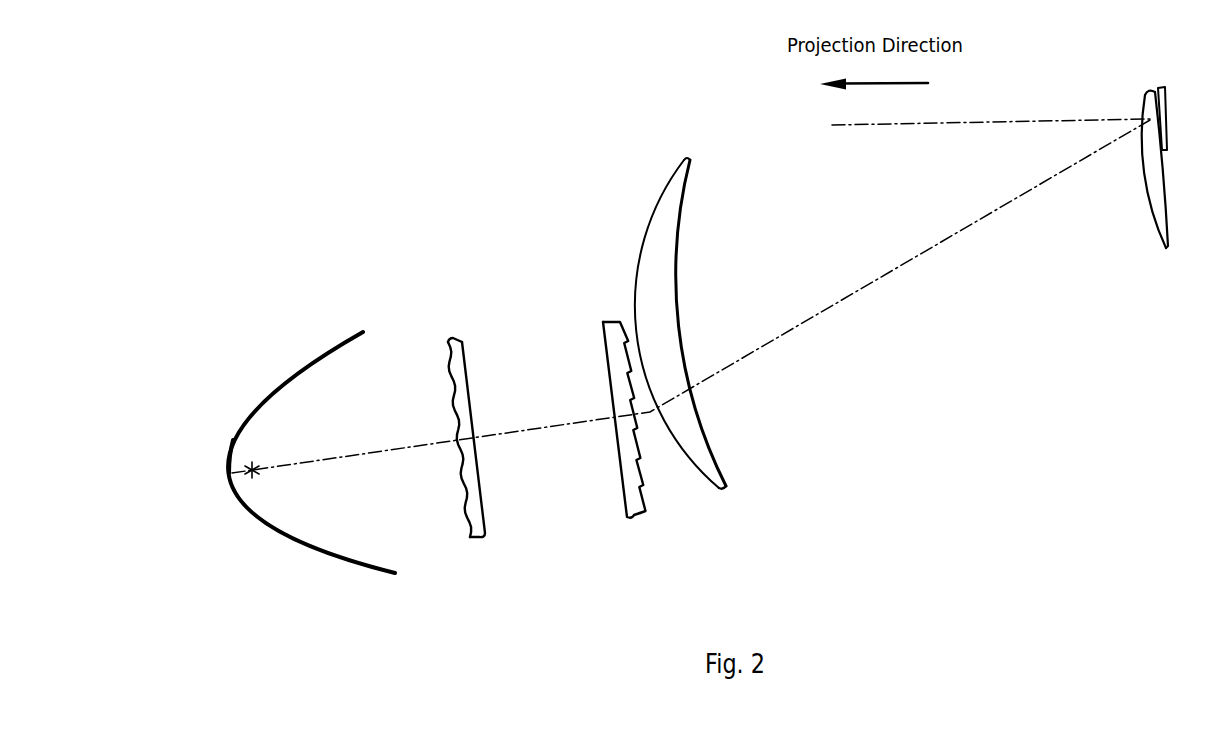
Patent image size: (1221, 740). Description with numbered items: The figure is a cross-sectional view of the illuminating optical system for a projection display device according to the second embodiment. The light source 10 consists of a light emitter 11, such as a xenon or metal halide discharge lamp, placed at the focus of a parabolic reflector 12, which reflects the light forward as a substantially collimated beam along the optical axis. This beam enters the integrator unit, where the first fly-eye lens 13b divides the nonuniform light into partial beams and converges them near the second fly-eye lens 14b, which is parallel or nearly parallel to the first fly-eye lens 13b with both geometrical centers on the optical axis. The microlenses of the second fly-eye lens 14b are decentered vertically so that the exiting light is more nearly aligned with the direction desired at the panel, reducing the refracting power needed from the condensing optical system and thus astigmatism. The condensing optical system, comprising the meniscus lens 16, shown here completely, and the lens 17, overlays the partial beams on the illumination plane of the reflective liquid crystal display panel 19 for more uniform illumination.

The light source 10 is at (309, 339).
The light emitter 11 is at (254, 463).
The parabolic reflector 12 is at (244, 423).
The first fly-eye lens 13b is at (455, 338).
The second fly-eye lens 14b is at (615, 320).
The meniscus lens 16 is at (670, 330).
The lens 17 is at (1152, 197).
The reflective liquid crystal display panel 19 is at (1164, 90).